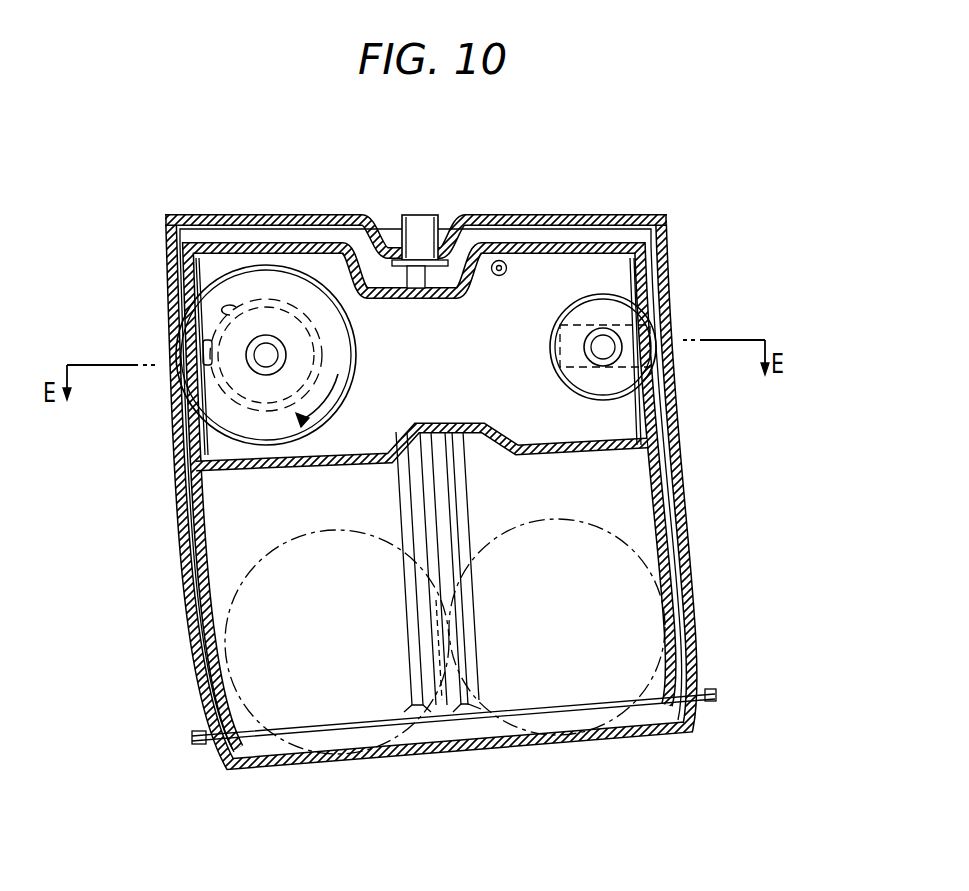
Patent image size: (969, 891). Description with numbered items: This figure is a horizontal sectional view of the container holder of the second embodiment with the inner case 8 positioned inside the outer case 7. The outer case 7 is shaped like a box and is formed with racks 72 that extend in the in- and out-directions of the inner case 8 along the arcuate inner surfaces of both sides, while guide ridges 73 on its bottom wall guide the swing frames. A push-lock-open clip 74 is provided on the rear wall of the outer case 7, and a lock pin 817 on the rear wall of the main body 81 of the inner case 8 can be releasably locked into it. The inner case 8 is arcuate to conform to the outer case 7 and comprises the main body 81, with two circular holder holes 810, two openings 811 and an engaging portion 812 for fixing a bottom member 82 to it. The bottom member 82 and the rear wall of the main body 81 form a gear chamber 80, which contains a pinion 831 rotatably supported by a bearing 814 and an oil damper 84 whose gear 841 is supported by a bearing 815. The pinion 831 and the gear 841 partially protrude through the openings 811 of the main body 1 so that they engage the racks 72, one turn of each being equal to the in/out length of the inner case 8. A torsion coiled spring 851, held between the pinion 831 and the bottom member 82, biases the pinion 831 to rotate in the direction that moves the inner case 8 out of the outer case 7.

The main body 1 is at (661, 216).
The outer case 7 is at (600, 218).
The racks 72 is at (166, 228).
The guide ridges 73 is at (400, 500).
The push-lock-open clip 74 is at (424, 226).
The inner case 8 is at (667, 732).
The gear chamber 80 is at (441, 375).
The main body 81 is at (668, 492).
The openings 811 is at (172, 310).
The engaging portion 812 is at (501, 260).
The bearing 814 is at (270, 350).
The bearing 815 is at (621, 349).
The lock pin 817 is at (440, 297).
The bottom member 82 is at (660, 450).
The pinion 831 is at (204, 397).
The oil damper 84 is at (672, 404).
The gear 841 is at (587, 379).
The torsion coiled spring 851 is at (258, 335).
The circular holder holes 810 is at (240, 593).